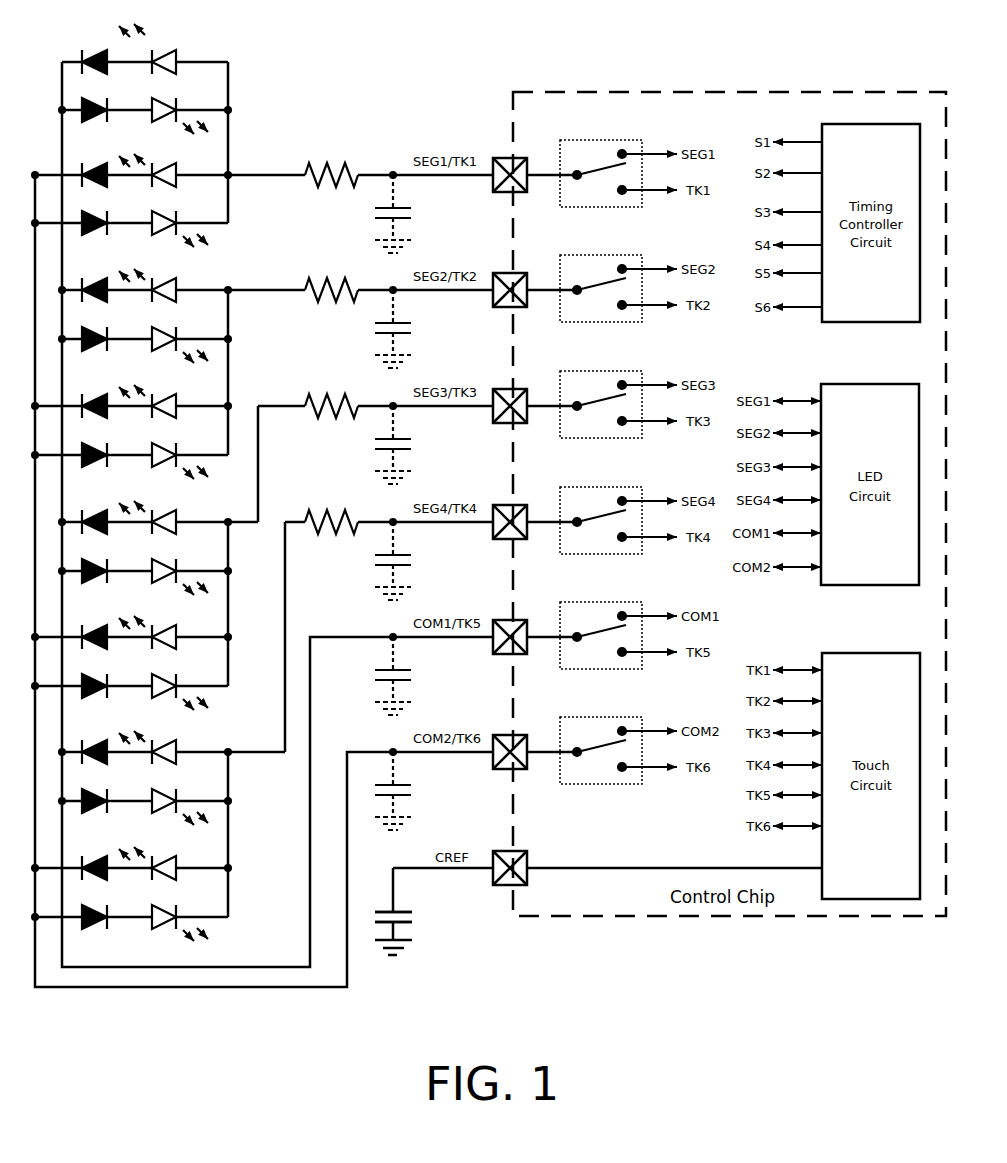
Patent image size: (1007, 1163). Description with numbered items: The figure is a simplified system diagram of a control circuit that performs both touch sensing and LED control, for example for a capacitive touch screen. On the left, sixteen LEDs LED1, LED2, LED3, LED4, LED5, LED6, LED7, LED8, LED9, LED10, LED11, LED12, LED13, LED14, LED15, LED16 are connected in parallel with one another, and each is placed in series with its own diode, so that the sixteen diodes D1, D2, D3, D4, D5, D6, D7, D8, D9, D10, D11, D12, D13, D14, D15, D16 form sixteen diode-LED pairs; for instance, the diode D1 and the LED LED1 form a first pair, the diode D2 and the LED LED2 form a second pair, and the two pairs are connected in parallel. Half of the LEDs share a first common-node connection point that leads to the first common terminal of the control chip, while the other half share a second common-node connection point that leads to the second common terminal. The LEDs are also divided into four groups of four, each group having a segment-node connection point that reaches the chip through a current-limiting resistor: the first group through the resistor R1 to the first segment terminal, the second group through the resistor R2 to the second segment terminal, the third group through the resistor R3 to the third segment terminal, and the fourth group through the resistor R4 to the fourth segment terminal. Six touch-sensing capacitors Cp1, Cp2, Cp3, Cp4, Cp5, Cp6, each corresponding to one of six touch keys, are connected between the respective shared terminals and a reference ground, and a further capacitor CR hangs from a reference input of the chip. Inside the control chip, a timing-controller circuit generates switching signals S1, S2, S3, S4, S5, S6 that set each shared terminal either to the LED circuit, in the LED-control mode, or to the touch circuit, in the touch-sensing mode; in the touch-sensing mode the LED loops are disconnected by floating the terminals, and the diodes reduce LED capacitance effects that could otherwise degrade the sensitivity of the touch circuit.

The diode D1 is at (92, 68).
The diode D2 is at (92, 116).
The diode D3 is at (92, 181).
The diode D4 is at (92, 229).
The diode D5 is at (92, 296).
The diode D6 is at (92, 345).
The diode D7 is at (92, 412).
The diode D8 is at (92, 461).
The diode D9 is at (92, 528).
The diode D10 is at (91, 577).
The diode D11 is at (91, 643).
The diode D12 is at (91, 692).
The diode D13 is at (91, 758).
The diode D14 is at (91, 807).
The diode D15 is at (91, 874).
The diode D16 is at (91, 923).
The LED LED1 is at (147, 55).
The LED LED2 is at (167, 116).
The LED LED3 is at (147, 176).
The LED LED4 is at (167, 229).
The LED LED5 is at (147, 291).
The LED LED6 is at (167, 345).
The LED LED7 is at (147, 407).
The LED LED8 is at (167, 461).
The LED LED9 is at (147, 523).
The LED LED10 is at (166, 577).
The LED LED11 is at (147, 638).
The LED LED12 is at (166, 692).
The LED LED13 is at (147, 753).
The LED LED14 is at (166, 807).
The LED LED15 is at (147, 869).
The LED LED16 is at (166, 923).
The current-limiting resistor R1 is at (331, 168).
The current-limiting resistor R2 is at (331, 283).
The current-limiting resistor R3 is at (331, 399).
The current-limiting resistor R4 is at (331, 515).
The touch-sensing capacitor Cp1 is at (400, 214).
The touch-sensing capacitor Cp2 is at (400, 329).
The touch-sensing capacitor Cp3 is at (400, 445).
The touch-sensing capacitor Cp4 is at (400, 561).
The touch-sensing capacitor Cp5 is at (400, 676).
The touch-sensing capacitor Cp6 is at (400, 791).
The reference capacitor CR is at (398, 909).
The switching signal S1 is at (594, 125).
The switching signal S2 is at (594, 240).
The switching signal S3 is at (594, 356).
The switching signal S4 is at (594, 472).
The switching signal S5 is at (594, 587).
The switching signal S6 is at (594, 702).